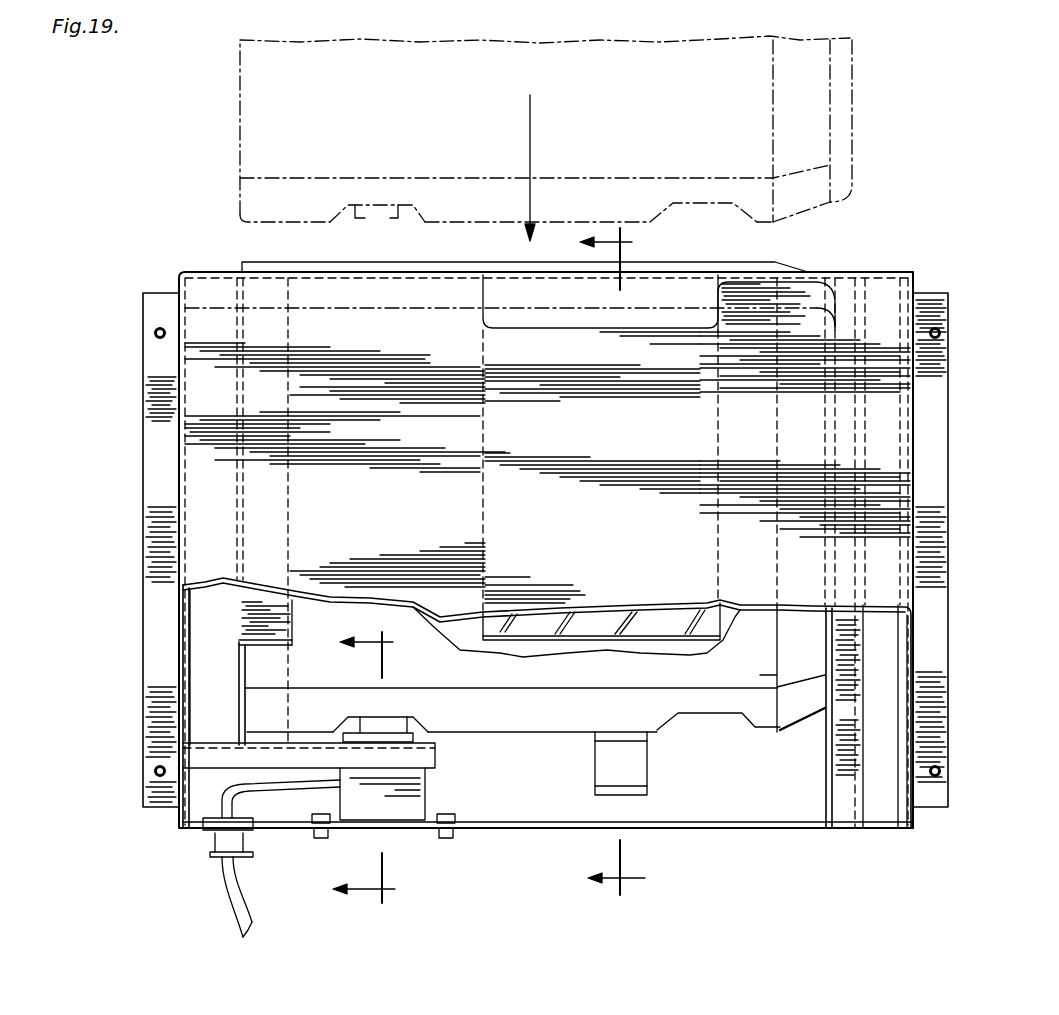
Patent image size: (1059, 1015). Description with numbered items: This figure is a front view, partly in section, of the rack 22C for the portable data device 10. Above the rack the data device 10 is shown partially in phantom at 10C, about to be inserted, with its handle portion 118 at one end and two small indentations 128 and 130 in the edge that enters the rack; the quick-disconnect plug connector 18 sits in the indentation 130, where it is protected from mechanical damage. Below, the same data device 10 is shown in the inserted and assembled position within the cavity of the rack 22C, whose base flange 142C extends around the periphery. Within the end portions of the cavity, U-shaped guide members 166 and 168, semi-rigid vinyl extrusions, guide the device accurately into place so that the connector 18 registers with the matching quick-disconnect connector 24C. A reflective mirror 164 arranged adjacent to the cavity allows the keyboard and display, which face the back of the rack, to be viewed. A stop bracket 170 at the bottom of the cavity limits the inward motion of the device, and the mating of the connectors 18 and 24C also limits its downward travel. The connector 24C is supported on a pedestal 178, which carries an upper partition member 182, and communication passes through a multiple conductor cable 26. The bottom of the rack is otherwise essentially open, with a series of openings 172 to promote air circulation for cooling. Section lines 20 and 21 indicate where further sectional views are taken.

The data device shown in phantom 10C is at (244, 106).
The handle portion 118 is at (855, 107).
The indentation 130 is at (348, 212).
The plug connector 18 is at (388, 215).
The indentation 128 is at (740, 207).
The section line 20- 20 is at (585, 501).
The section line 21— 21 is at (356, 781).
The rack 22C is at (131, 424).
The base flange 142C is at (150, 538).
The U-shaped guide member 166 is at (292, 630).
The reflective mirror 164 is at (652, 625).
The U-shaped guide member 168 is at (788, 622).
The portable data device 10 is at (575, 722).
The stop bracket 170 is at (625, 742).
The upper partition member 182 is at (445, 751).
The quick-disconnect connector 24C is at (382, 794).
The pedestal 178 is at (440, 803).
The openings 172 is at (587, 832).
The multiple conductor cable 26 is at (225, 898).